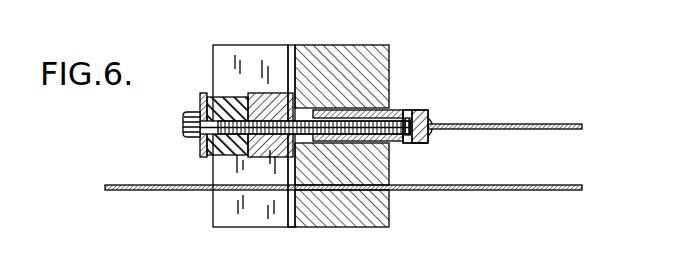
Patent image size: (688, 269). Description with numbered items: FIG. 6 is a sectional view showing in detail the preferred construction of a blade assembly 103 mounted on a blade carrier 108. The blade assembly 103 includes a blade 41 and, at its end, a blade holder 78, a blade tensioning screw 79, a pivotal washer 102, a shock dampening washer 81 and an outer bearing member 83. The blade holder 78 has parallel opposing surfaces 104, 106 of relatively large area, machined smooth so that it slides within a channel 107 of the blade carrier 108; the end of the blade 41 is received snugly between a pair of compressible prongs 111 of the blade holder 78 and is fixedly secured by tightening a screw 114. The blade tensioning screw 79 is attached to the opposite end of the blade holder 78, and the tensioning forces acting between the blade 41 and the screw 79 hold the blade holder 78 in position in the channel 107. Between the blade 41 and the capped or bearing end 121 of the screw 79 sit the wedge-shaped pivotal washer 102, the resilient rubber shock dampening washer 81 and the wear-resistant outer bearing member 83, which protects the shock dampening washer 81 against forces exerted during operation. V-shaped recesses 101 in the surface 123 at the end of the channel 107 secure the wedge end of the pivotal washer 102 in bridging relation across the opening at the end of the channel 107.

The blade 41 is at (538, 124).
The blade holder 78 is at (437, 112).
The blade tensioning screw 79 is at (213, 122).
The shock dampening washer 81 is at (216, 153).
The outer bearing member 83 is at (203, 103).
The V-shaped recesses 101 is at (290, 45).
The pivotal washer 102 is at (270, 98).
The blade assembly 103 is at (192, 145).
The surface 104 is at (423, 108).
The surface 106 is at (420, 144).
The channel 107 is at (391, 69).
The blade carrier 108 is at (306, 110).
The prongs 111 is at (430, 118).
The screw 114 is at (418, 103).
The capped or bearing end 121 is at (183, 127).
The surface 123 is at (289, 228).